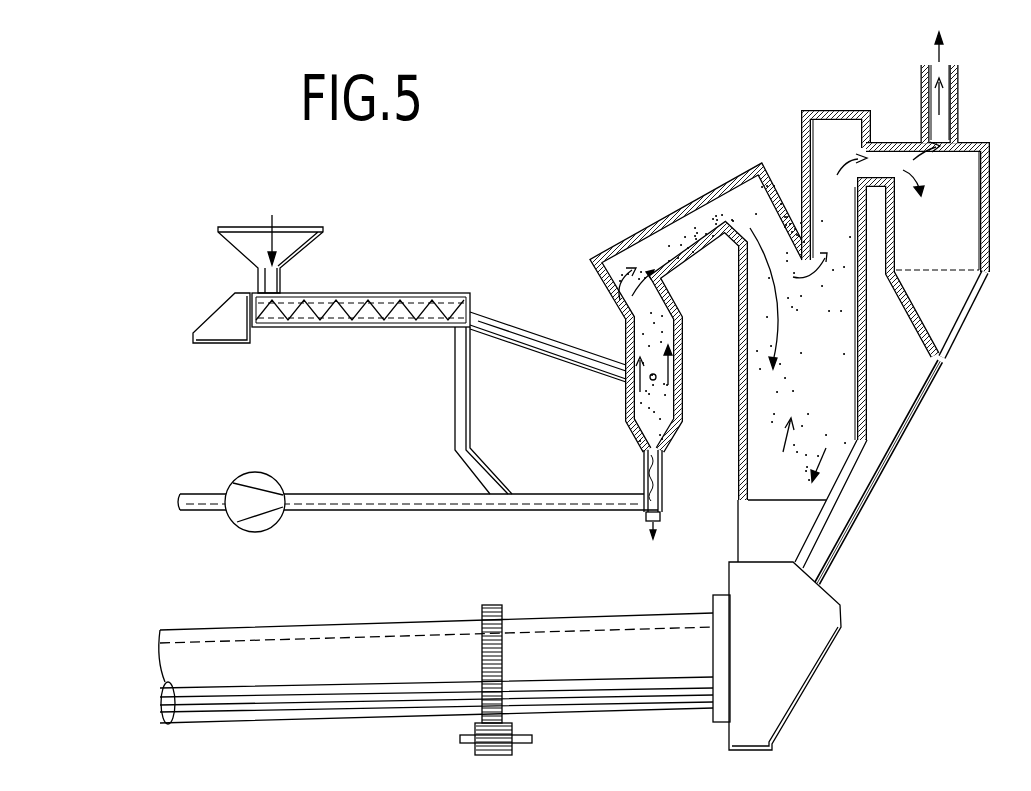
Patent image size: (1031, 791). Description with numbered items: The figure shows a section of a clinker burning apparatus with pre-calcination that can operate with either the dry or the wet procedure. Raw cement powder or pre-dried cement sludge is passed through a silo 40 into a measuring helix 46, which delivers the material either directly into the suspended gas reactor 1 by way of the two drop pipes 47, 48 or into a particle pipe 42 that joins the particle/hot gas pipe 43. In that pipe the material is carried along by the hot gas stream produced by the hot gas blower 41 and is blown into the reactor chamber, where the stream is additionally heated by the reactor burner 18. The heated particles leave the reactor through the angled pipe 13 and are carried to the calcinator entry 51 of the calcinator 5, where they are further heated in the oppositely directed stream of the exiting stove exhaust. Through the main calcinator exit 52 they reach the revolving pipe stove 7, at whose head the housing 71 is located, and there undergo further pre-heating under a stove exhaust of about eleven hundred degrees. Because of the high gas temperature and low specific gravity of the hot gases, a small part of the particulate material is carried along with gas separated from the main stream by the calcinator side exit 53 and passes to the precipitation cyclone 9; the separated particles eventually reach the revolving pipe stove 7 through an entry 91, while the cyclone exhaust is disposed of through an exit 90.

The suspended gas reactor 1 is at (640, 397).
The calcinator 5 is at (837, 428).
The revolving pipe stove 7 is at (375, 632).
The precipitation cyclone 9 is at (967, 230).
The angled pipe 13 is at (613, 260).
The reactor burner 18 is at (658, 528).
The silo 40 is at (305, 240).
The hot gas blower 41 is at (262, 525).
The particle pipe 42 is at (456, 402).
The particle/hot gas pipe 43 is at (552, 512).
The measuring helix 46 is at (390, 298).
The drop pipe 47 is at (548, 331).
The drop pipe 48 is at (537, 343).
The calcinator entry 51 is at (750, 192).
The main calcinator exit 52 is at (803, 528).
The calcinator side exit 53 is at (847, 148).
The kiln head housing 71 is at (822, 613).
The exit 90 is at (947, 92).
The entry 91 is at (900, 433).